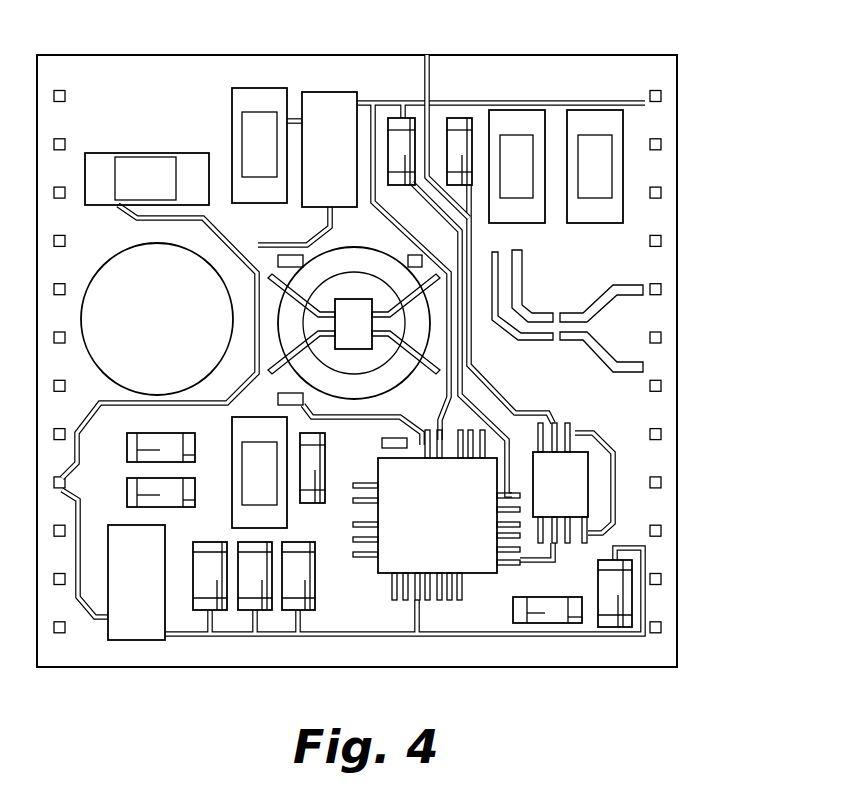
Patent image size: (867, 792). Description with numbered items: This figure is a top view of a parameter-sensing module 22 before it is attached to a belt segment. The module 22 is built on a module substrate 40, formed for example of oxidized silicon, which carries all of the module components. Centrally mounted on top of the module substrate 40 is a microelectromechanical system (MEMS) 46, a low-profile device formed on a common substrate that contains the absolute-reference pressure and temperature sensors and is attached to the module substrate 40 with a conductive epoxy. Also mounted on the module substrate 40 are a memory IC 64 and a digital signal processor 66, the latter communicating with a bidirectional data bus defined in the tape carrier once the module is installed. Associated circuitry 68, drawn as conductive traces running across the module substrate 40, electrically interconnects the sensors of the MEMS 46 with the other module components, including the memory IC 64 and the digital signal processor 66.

The module 22 is at (696, 219).
The module substrate 40 is at (143, 678).
The microelectromechanical system (MEMS) 46 is at (335, 300).
The memory IC 64 is at (590, 478).
The digital signal processor 66 is at (482, 573).
The associated circuitry 68 is at (428, 100).